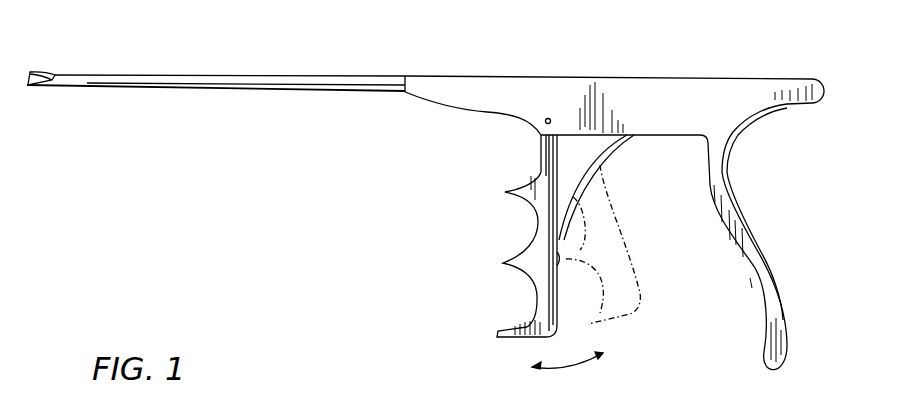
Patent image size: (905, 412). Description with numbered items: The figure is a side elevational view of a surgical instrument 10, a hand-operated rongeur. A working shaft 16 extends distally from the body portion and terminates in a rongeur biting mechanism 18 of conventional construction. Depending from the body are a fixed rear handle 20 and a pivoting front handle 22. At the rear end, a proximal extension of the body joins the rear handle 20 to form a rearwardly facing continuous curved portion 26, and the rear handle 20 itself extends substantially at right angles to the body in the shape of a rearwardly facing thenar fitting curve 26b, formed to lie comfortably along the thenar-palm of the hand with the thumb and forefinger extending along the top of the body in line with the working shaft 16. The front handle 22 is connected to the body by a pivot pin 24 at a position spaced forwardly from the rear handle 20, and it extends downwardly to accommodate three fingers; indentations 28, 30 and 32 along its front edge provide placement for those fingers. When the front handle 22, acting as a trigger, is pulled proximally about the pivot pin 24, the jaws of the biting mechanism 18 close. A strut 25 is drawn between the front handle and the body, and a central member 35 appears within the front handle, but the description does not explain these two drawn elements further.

The surgical instrument 10 is at (425, 201).
The working shaft 16 is at (216, 70).
The rongeur biting mechanism 18 is at (44, 58).
The rear handle 20 is at (762, 266).
The front handle 22 is at (561, 267).
The pivot pin 24 is at (558, 107).
The strut 25 is at (601, 187).
The rearwardly facing continuous curved portion 26 is at (757, 140).
The thenar fitting curve 26b is at (757, 241).
The indentation 28 is at (524, 236).
The indentation 30 is at (550, 249).
The indentation 32 is at (518, 318).
The central rod 35 is at (571, 231).